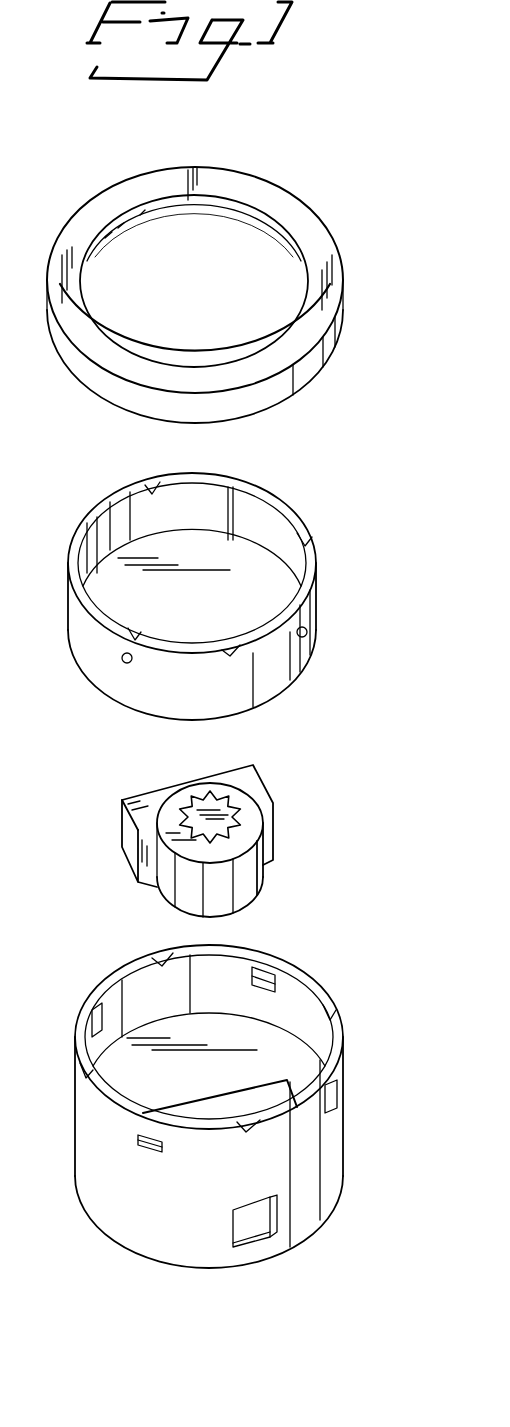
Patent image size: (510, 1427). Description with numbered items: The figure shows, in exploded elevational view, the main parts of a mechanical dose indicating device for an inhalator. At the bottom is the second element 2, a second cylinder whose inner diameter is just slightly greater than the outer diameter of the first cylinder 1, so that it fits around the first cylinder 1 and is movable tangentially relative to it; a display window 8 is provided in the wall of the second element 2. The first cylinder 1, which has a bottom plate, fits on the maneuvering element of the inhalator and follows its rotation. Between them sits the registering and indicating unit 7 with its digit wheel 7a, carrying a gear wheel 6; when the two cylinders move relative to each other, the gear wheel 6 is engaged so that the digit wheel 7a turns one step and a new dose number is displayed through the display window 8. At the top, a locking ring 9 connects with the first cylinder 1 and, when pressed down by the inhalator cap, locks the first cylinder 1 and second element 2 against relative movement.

The locking ring 9 is at (302, 195).
The cylinder 1 is at (292, 502).
The registering and indicating unit 7 is at (194, 837).
The gear wheel 6 is at (232, 805).
The digit wheel 7a is at (262, 878).
The second element 2 is at (236, 1103).
The display window 8 is at (263, 1223).